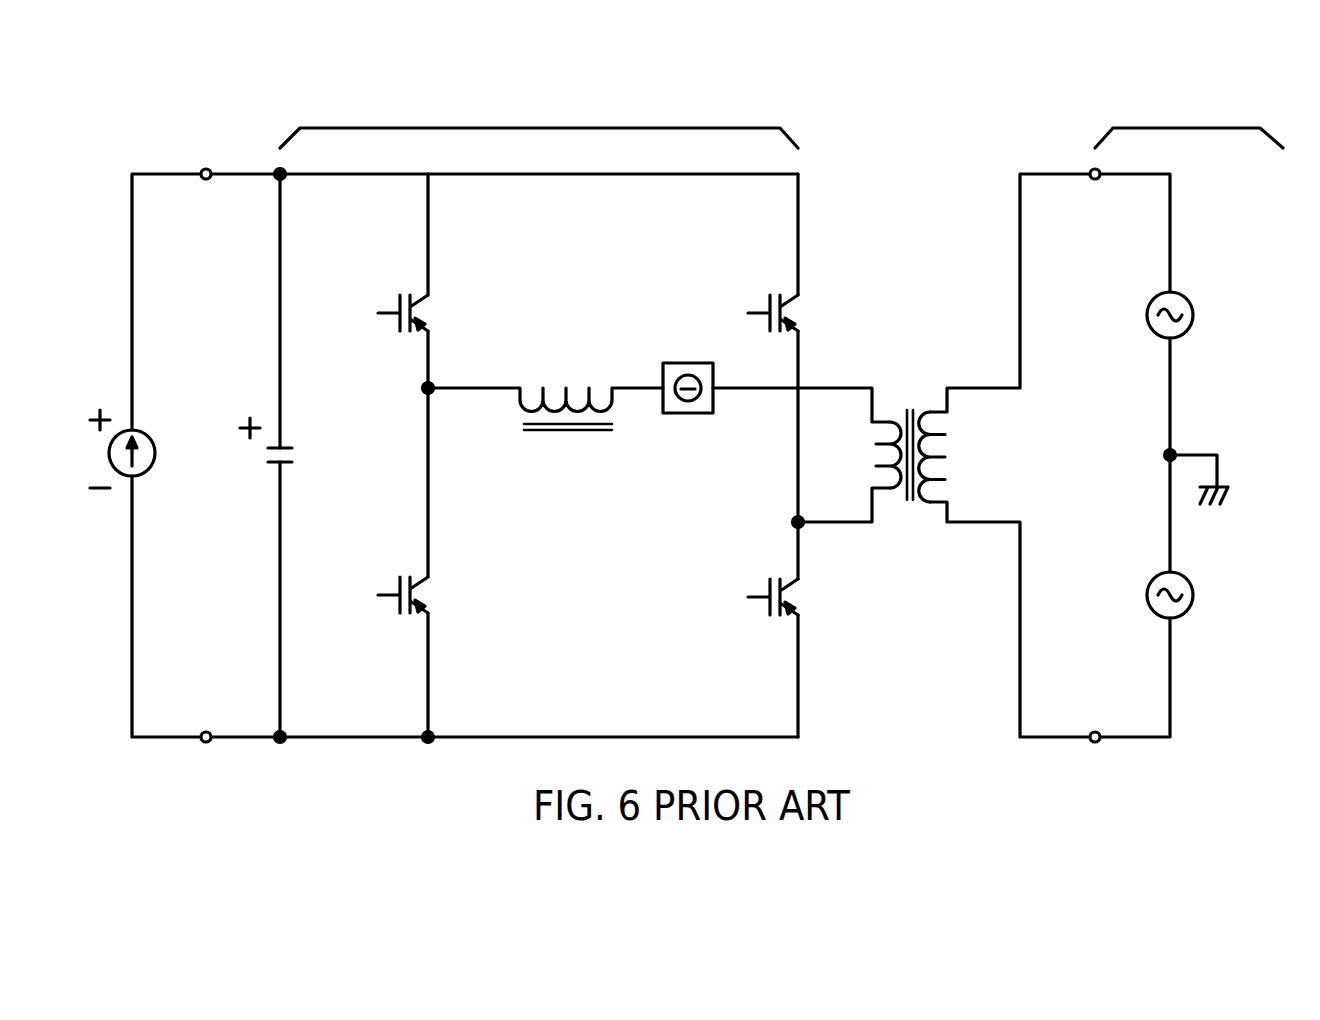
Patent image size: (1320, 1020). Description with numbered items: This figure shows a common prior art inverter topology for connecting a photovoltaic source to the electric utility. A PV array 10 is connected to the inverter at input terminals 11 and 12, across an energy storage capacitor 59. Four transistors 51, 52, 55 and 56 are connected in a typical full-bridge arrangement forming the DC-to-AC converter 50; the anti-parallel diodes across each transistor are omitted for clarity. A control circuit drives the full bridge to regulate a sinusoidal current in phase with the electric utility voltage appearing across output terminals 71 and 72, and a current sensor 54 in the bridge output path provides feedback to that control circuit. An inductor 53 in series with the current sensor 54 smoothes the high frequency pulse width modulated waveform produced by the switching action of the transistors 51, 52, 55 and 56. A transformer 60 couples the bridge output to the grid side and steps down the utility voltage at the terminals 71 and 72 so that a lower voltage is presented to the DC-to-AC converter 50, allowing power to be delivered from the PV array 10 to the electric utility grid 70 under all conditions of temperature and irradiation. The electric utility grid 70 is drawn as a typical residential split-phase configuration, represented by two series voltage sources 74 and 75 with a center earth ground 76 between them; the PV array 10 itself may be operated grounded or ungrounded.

The photovoltaic array 10 is at (144, 449).
The input terminal 11 is at (204, 194).
The input terminal 12 is at (208, 716).
The DC-to-AC converter 50 is at (562, 331).
The transistor 51 is at (426, 316).
The transistor 52 is at (428, 598).
The inductor 53 is at (545, 432).
The current sensor 54 is at (688, 412).
The transistor 55 is at (796, 316).
The transistor 56 is at (796, 596).
The energy storage capacitor 59 is at (290, 446).
The transformer 60 is at (910, 426).
The electric utility grid 70 is at (1181, 393).
The output terminal 71 is at (1096, 196).
The output terminal 72 is at (1098, 716).
The utility voltage source 74 is at (1195, 315).
The utility voltage source 75 is at (1196, 595).
The center earth ground 76 is at (1223, 484).